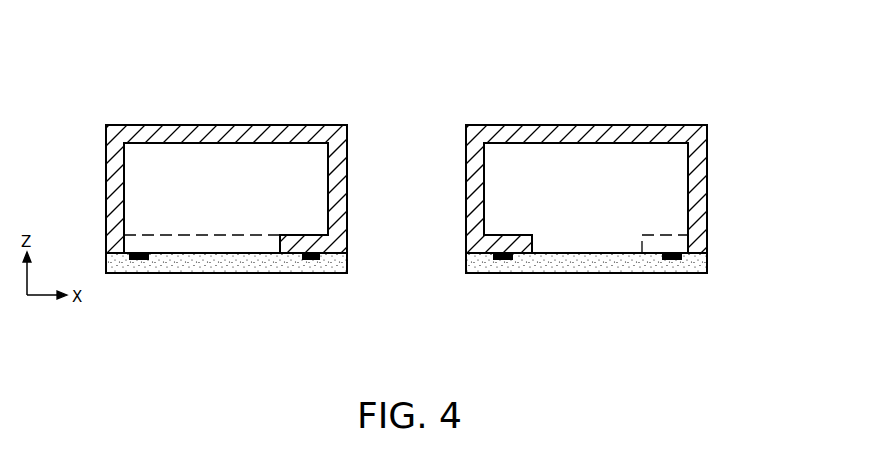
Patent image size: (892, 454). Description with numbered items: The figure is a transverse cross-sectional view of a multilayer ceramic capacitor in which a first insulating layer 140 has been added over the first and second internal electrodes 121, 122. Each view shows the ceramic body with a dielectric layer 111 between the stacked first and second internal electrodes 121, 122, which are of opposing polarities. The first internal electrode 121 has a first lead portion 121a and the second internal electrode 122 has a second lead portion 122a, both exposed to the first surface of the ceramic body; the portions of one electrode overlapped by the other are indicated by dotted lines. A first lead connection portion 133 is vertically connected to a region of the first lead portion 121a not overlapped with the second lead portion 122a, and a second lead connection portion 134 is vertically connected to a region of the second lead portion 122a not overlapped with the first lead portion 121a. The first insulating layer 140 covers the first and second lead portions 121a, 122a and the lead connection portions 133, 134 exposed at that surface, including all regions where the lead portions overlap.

The dielectric layer 111 is at (281, 130).
The first internal electrode 121 is at (318, 183).
The first lead portion 121a is at (243, 254).
The second internal electrode 122 is at (643, 130).
The second lead portion 122a is at (616, 254).
The first lead connection portion 133 is at (134, 253).
The second lead connection portion 134 is at (320, 257).
The first insulating layer 140 is at (190, 268).